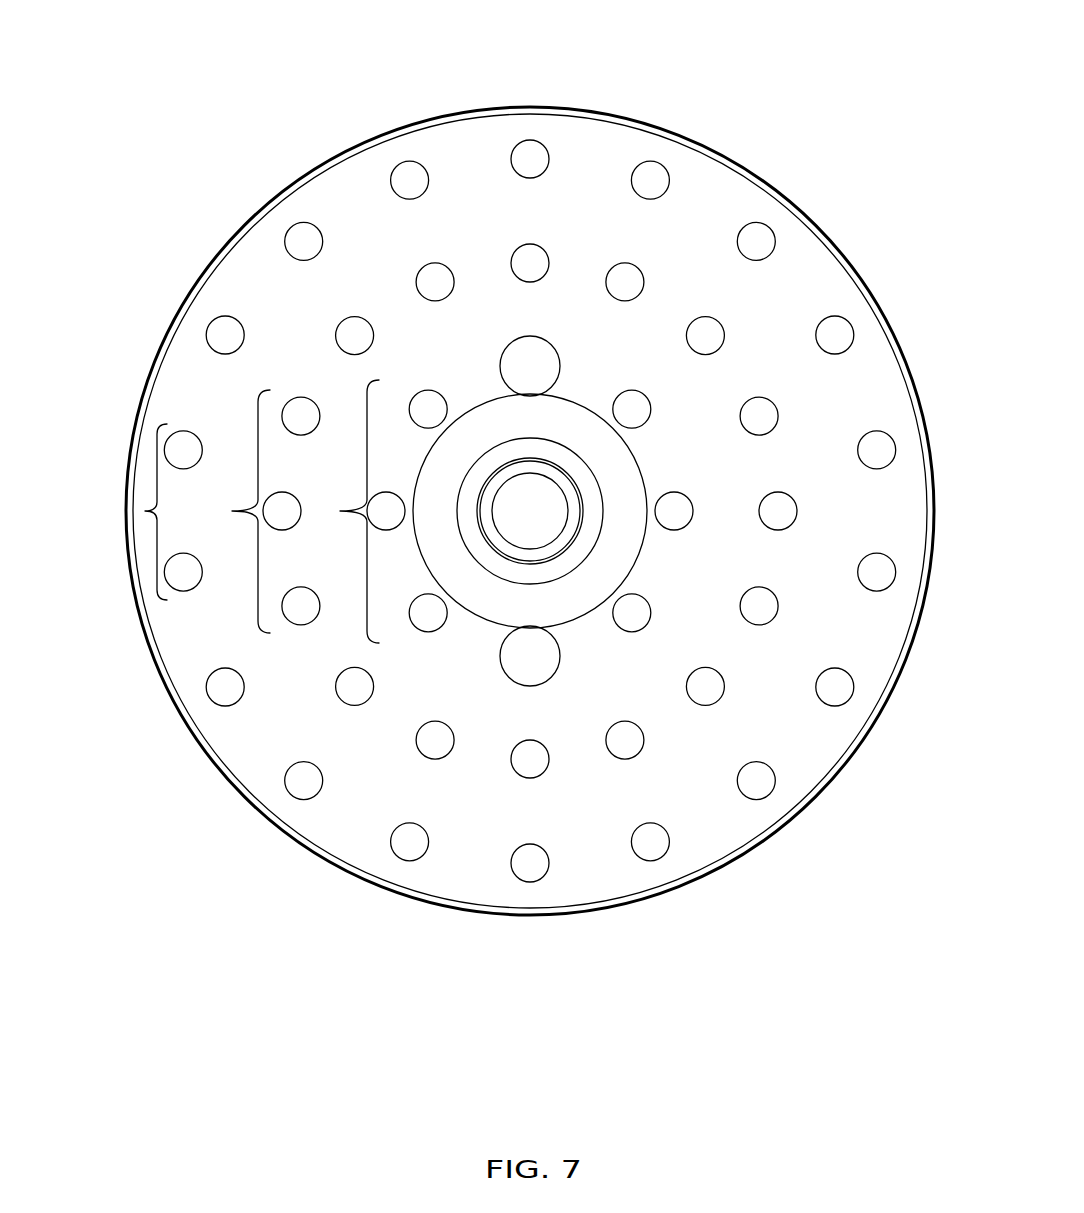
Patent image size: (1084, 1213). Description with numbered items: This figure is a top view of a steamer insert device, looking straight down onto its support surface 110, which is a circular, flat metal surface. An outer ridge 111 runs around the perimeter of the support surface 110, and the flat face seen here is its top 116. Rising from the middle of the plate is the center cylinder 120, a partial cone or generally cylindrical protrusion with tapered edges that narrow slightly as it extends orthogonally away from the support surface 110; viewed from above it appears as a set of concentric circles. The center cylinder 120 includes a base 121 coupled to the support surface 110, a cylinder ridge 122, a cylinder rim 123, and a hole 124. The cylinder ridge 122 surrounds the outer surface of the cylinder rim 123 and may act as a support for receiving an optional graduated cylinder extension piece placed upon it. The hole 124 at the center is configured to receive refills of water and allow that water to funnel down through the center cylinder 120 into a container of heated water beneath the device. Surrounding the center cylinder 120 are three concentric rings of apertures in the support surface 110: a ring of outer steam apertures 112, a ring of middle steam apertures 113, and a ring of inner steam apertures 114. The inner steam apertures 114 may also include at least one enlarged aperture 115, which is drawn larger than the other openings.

The support surface 110 is at (845, 800).
The outer ridge 111 is at (810, 218).
The outer steam apertures 112 is at (145, 511).
The middle steam apertures 113 is at (232, 511).
The inner steam apertures 114 is at (340, 511).
The enlarged aperture 115 is at (552, 677).
The top 116 is at (677, 222).
The center cylinder 120 is at (472, 398).
The base 121 is at (548, 450).
The cylinder ridge 122 is at (575, 478).
The cylinder rim 123 is at (574, 511).
The hole 124 is at (528, 521).